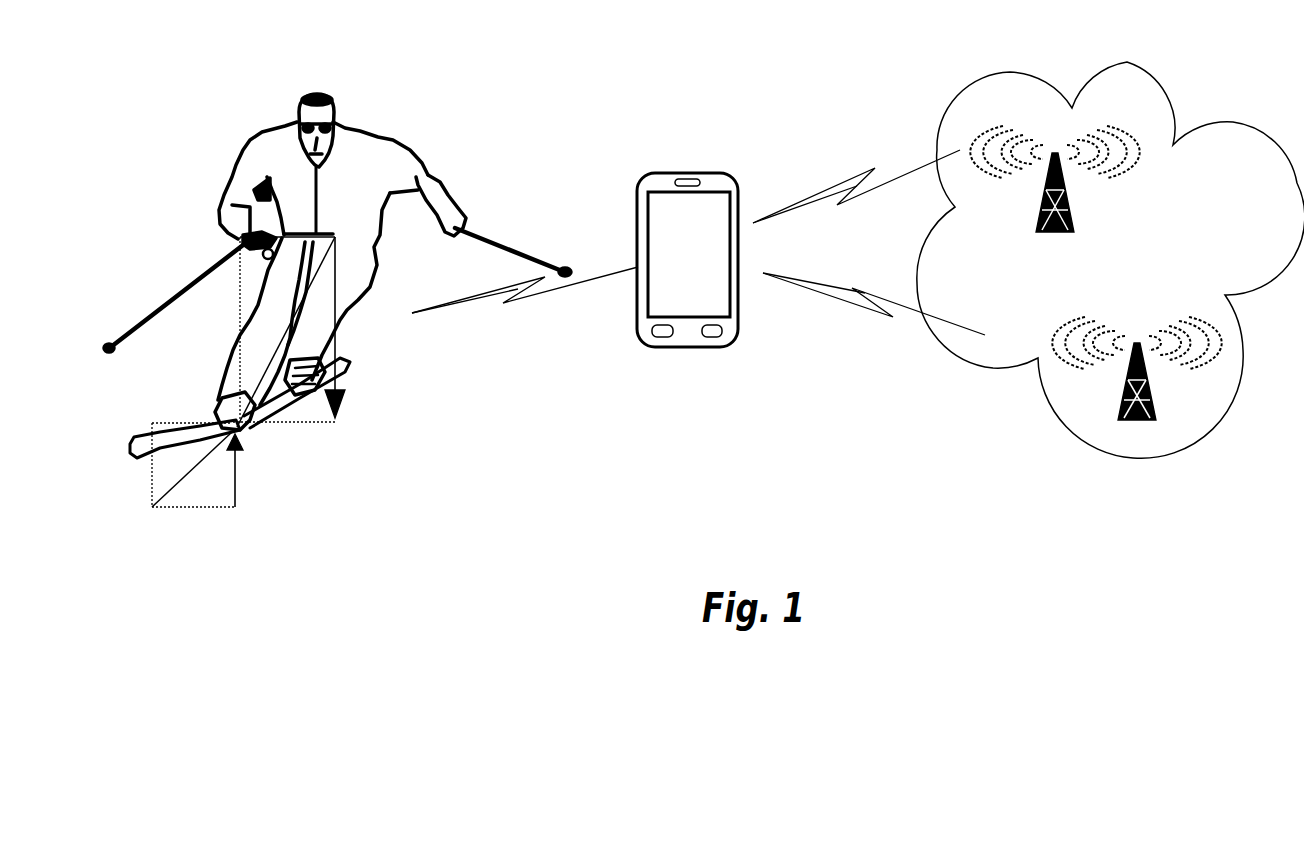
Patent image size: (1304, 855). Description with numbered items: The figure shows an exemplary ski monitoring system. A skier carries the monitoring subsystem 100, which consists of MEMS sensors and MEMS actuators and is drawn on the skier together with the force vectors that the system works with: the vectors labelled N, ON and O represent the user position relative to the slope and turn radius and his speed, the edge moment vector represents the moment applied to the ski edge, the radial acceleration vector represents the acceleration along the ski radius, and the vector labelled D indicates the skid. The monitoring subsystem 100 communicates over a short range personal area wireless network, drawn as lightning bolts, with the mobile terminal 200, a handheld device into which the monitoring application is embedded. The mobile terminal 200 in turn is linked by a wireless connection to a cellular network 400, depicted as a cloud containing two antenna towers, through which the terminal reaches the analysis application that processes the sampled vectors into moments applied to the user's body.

The monitoring subsystem 100 is at (150, 72).
The mobile terminal 200 is at (785, 432).
The cellular network 400 is at (850, 55).